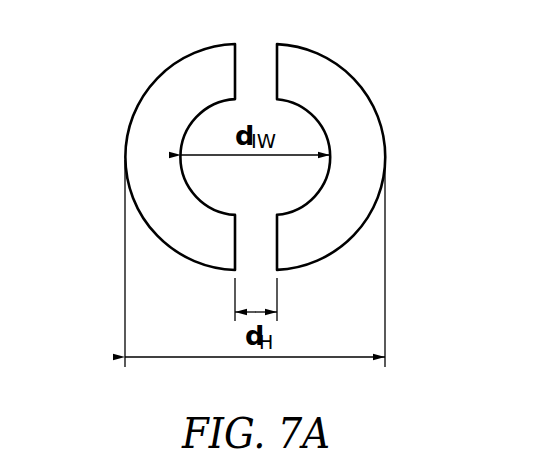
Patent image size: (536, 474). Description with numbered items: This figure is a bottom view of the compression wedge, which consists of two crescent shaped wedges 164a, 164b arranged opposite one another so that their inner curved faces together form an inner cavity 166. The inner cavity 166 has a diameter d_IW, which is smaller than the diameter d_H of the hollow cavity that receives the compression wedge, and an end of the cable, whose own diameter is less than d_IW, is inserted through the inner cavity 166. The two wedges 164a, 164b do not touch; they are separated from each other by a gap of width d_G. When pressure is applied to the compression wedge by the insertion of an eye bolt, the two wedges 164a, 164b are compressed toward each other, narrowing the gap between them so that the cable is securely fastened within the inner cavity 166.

The crescent shaped wedge 164a is at (140, 95).
The crescent shaped wedge 164b is at (372, 97).
The inner cavity 166 is at (255, 97).